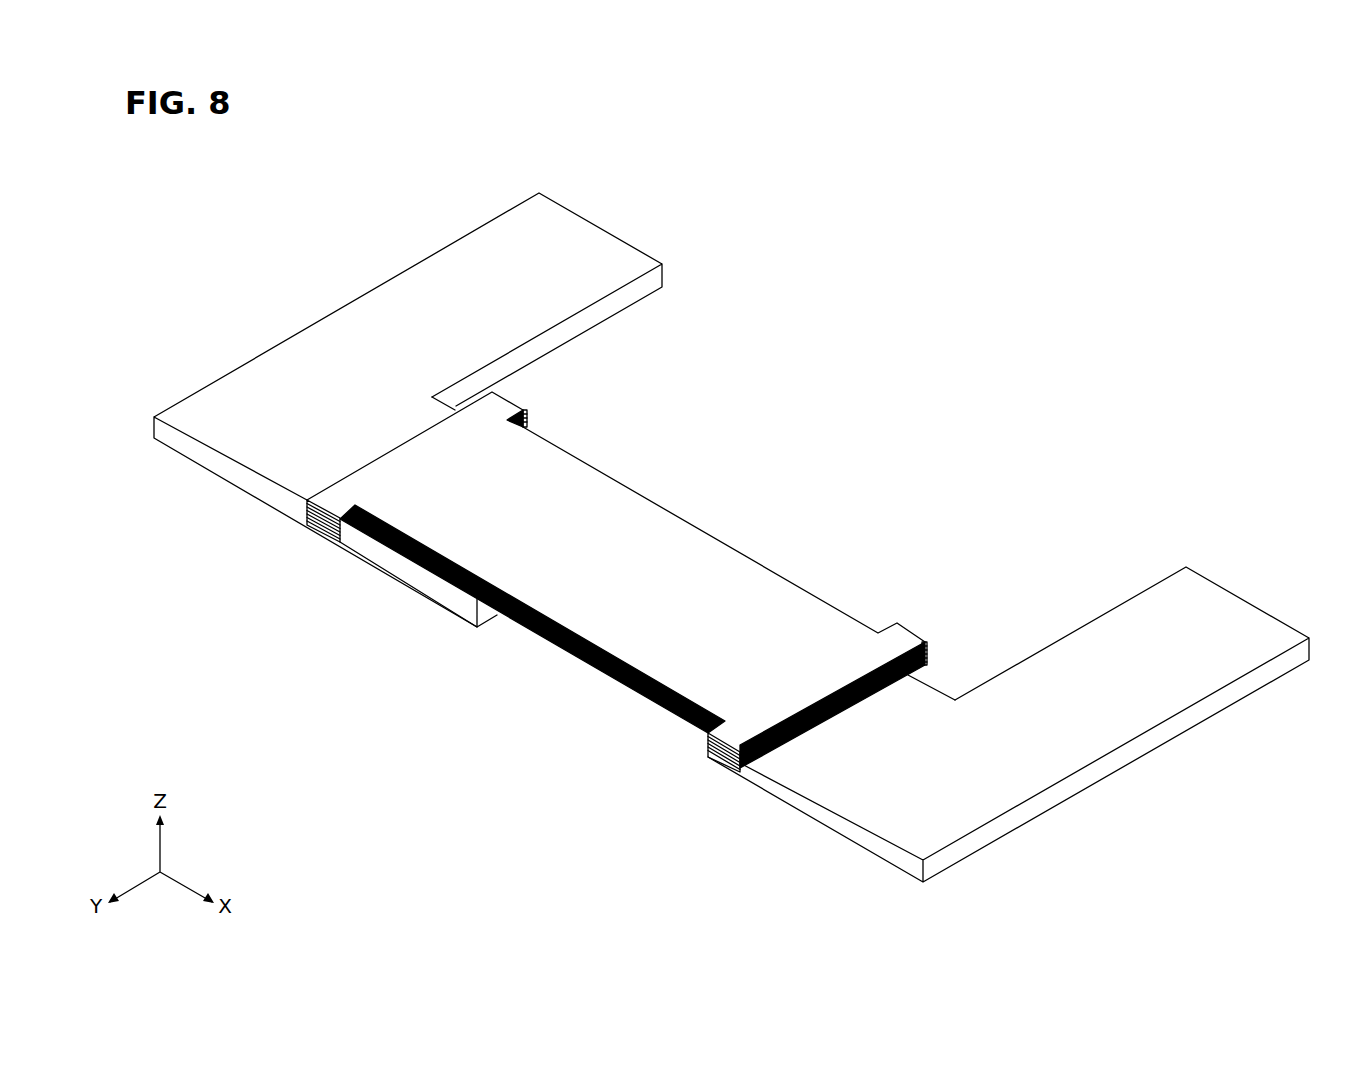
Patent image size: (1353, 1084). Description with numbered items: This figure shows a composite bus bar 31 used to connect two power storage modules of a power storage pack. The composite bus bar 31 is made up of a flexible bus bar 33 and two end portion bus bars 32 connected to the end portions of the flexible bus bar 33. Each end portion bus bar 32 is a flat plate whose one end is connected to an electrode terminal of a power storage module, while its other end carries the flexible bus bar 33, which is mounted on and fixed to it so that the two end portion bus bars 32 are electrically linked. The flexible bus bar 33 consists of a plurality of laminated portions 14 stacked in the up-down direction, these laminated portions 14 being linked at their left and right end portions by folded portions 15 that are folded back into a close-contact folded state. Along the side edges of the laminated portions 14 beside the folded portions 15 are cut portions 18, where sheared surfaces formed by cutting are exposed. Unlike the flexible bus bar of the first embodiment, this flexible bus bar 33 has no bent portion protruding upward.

The laminated portion 14 is at (400, 476).
The folded portion 15 is at (527, 413).
The cut portion 18 is at (528, 427).
The composite bus bar 31 is at (865, 173).
The end portion bus bar 32 is at (606, 266).
The flexible bus bar 33 is at (660, 550).